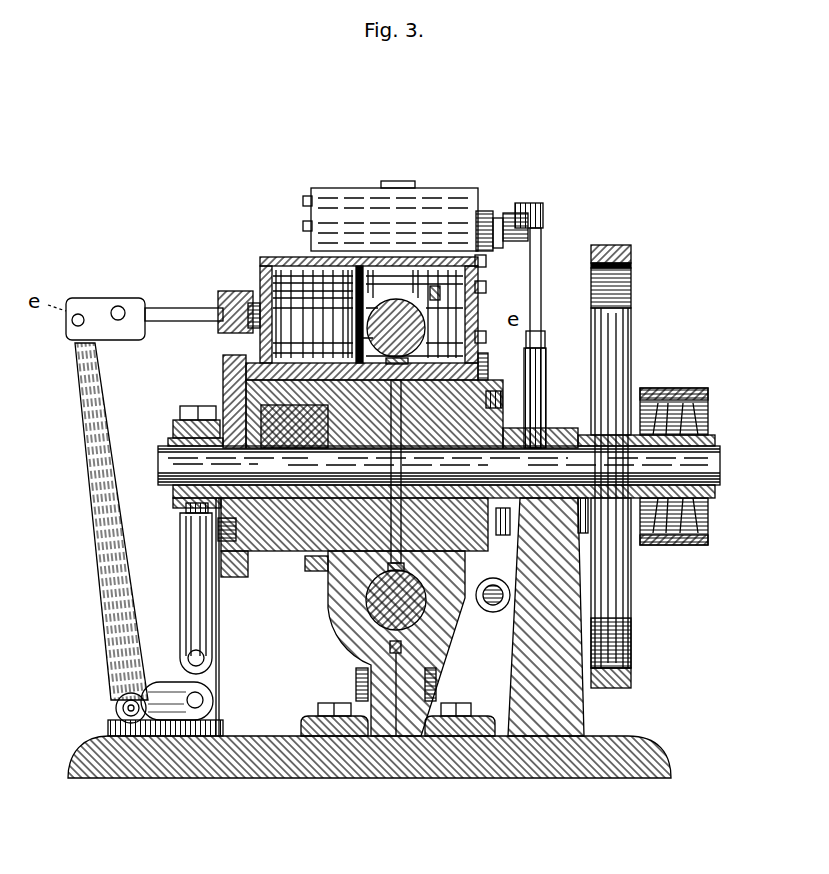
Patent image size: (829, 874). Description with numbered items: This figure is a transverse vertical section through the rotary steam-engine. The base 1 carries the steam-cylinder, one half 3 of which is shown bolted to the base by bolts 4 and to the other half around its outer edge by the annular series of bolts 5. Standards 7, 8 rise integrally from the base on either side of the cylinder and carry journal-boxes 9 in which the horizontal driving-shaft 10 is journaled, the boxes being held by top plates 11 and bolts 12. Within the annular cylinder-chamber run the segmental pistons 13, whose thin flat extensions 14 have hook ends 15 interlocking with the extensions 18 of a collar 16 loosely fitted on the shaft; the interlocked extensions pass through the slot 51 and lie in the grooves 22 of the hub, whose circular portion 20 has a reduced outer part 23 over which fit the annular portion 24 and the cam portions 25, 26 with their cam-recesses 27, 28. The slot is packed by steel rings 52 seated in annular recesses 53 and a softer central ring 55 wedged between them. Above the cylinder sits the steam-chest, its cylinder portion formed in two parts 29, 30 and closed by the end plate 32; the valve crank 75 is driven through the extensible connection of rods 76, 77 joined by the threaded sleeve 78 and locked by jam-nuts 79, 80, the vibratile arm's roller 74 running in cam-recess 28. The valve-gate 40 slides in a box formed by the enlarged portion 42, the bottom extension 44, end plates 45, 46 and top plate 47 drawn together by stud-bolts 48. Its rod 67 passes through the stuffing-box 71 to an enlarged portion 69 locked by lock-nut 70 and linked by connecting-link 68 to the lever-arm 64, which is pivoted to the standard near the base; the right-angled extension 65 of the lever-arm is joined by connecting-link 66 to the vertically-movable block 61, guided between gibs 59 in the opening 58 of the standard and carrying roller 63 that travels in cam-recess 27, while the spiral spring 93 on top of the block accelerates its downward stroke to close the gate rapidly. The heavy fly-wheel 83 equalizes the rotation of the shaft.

The base 1 is at (430, 750).
The steam-cylinder half 3 is at (322, 612).
The bolts 4 is at (325, 695).
The annular series of bolts 5 is at (350, 672).
The standard 7 is at (198, 710).
The standard 8 is at (553, 712).
The journal-boxes 9 is at (163, 428).
The driving-shaft 10 is at (714, 458).
The top plates 11 is at (168, 398).
The bolts 12 is at (182, 398).
The segmental pistons 13 is at (417, 313).
The thin flat extensions 14 is at (470, 345).
The interlocking hook ends 15 is at (358, 580).
The collar 16 is at (297, 545).
The extensions 18 is at (470, 365).
The circular portion 20 is at (345, 586).
The straight recesses or grooves 22 is at (385, 400).
The reduced outer part 23 is at (215, 520).
The annular portion 24 is at (445, 622).
The cam portion 25 is at (220, 573).
The cam portion 26 is at (535, 370).
The cam-recess 27 is at (213, 378).
The cam-recess 28 is at (537, 325).
The steam-chest cylinder part 29 is at (320, 287).
The steam-chest cylinder part 30 is at (430, 200).
The end plate 32 is at (540, 210).
The valve-gate 40 is at (370, 240).
The enlarged portion 42 is at (480, 245).
The bottom extension 44 is at (253, 365).
The end plate 45 is at (235, 278).
The end plate 46 is at (462, 300).
The top plate 47 is at (250, 262).
The stud-bolts 48 is at (300, 215).
The slot 51 is at (313, 640).
The annular ring 52 is at (320, 625).
The annular recess 53 is at (335, 560).
The central ring 55 is at (428, 676).
The longitudinal opening 58 is at (160, 670).
The gibs 59 is at (165, 500).
The vertically-movable block 61 is at (188, 608).
The roller 63 is at (210, 527).
The lever-arm 64 is at (100, 560).
The right-angled extension 65 is at (157, 693).
The connecting-link 66 is at (195, 688).
The rod 67 is at (167, 310).
The connecting-link 68 is at (85, 295).
The enlarged portion 69 is at (112, 305).
The lock-nut 70 is at (128, 314).
The stuffing-box 71 is at (167, 307).
The roller 74 is at (623, 666).
The crank 75 is at (535, 225).
The rod 76 is at (623, 255).
The rod 77 is at (595, 376).
The tubular coupling or sleeve 78 is at (623, 360).
The jam-nut 79 is at (623, 285).
The jam-nut 80 is at (700, 395).
The fly-wheel 83 is at (623, 607).
The spiral spring 93 is at (185, 505).